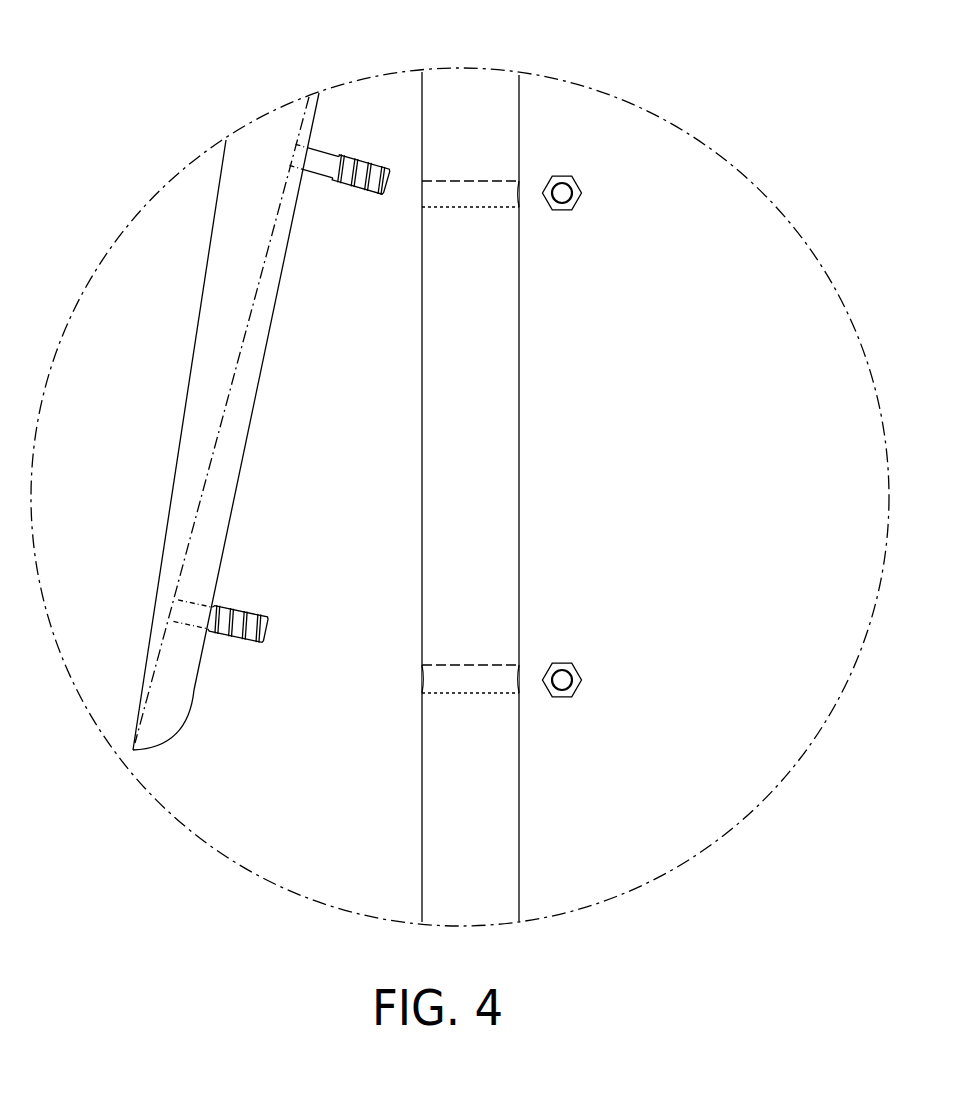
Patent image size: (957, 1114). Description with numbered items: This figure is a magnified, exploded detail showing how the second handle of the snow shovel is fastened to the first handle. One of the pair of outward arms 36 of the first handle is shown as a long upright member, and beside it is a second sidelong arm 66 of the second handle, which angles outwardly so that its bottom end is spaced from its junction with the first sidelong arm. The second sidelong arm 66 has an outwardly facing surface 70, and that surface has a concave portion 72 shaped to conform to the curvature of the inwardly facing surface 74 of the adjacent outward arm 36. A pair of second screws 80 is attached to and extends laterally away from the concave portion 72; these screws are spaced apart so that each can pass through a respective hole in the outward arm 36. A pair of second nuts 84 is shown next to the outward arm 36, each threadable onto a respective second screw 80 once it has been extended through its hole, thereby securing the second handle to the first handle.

The outward arm 36 is at (519, 560).
The second sidelong arm 66 is at (198, 330).
The outwardly facing surface 70 is at (255, 397).
The concave portion 72 is at (288, 318).
The inwardly facing surface 74 is at (400, 807).
The second screw 80 is at (370, 164).
The second nut 84 is at (578, 188).